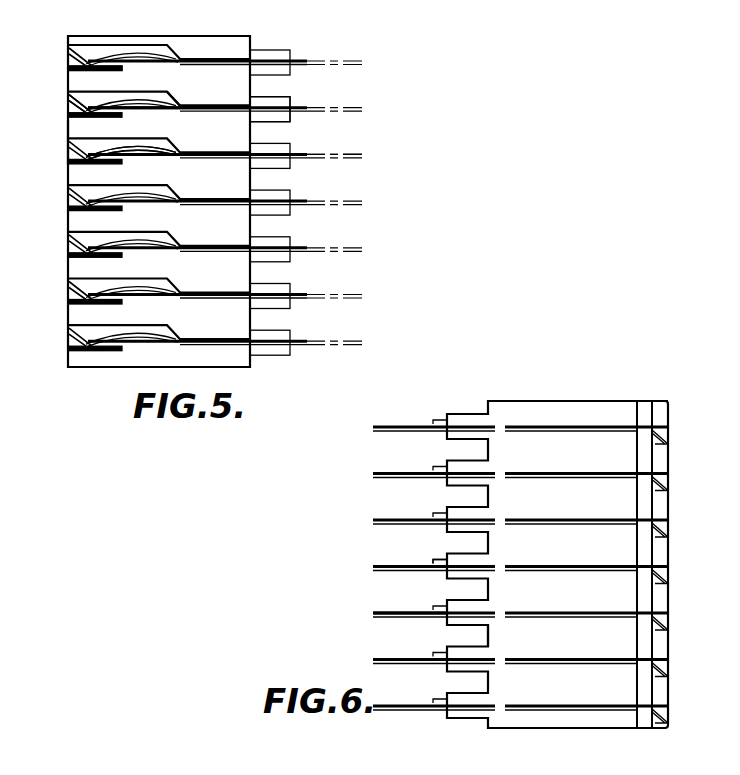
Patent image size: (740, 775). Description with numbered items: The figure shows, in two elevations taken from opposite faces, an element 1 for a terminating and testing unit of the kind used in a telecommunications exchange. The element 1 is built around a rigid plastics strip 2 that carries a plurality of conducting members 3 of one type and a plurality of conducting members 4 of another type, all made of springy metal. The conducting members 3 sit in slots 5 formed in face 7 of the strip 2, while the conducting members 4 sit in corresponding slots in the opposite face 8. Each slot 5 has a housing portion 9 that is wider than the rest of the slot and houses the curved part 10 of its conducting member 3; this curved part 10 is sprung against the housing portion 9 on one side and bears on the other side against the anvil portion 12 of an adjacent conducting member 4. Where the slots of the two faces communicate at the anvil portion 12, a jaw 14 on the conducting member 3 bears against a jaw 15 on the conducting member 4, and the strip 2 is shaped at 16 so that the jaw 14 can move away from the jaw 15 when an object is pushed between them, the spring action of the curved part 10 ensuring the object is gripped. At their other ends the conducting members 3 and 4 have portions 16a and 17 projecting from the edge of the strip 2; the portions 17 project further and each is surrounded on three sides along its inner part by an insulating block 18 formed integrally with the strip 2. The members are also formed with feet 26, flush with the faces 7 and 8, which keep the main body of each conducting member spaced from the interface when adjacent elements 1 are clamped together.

In FIG. 5, the element 1 is at (56, 292).
In FIG. 6, the element 1 is at (681, 452).
In FIG. 5, the rigid plastics strip 2 is at (201, 242).
In FIG. 6, the rigid plastics strip 2 is at (568, 651).
In FIG. 5, the conducting member 3 is at (193, 106).
In FIG. 6, the conducting member 4 is at (563, 480).
In FIG. 5, the slot 5 is at (238, 101).
In FIG. 5, the face 7 is at (94, 223).
In FIG. 6, the face 8 is at (508, 640).
In FIG. 5, the housing portion 9 is at (95, 162).
In FIG. 5, the curved part 10 is at (150, 152).
In FIG. 5, the anvil portion 12 is at (90, 81).
In FIG. 5, the jaw 14 is at (76, 105).
In FIG. 6, the jaw 15 is at (653, 443).
In FIG. 5, the shaped region of the strip 16 is at (70, 138).
In FIG. 5, the projecting portion 16a is at (300, 157).
In FIG. 6, the projecting portion 16a is at (442, 565).
In FIG. 5, the projecting portion 17 is at (366, 160).
In FIG. 6, the projecting portion 17 is at (407, 587).
In FIG. 5, the insulating block 18 is at (284, 102).
In FIG. 6, the insulating block 18 is at (452, 510).
In FIG. 5, the feet 26 is at (213, 111).
In FIG. 6, the feet 26 is at (502, 478).